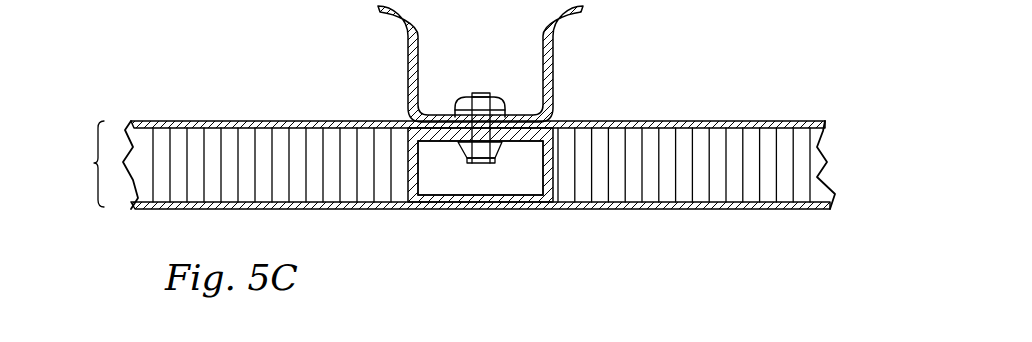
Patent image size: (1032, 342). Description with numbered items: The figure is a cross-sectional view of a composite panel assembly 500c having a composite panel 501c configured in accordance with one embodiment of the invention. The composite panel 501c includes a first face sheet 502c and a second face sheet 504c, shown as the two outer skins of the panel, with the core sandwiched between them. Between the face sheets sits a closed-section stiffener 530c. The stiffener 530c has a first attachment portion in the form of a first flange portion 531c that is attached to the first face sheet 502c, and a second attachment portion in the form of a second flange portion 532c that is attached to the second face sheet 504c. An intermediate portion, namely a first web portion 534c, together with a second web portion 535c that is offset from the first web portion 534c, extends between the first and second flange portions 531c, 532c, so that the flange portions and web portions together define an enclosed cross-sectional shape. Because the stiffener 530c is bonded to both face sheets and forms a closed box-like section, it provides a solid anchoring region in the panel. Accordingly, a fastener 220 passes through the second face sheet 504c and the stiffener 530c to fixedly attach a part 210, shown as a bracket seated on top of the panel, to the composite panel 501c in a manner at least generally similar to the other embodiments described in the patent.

The composite panel assembly 500c is at (120, 231).
The composite panel 501c is at (93, 163).
The second face sheet 504c is at (722, 122).
The first face sheet 502c is at (745, 210).
The closed-section stiffener 530c is at (450, 210).
The first flange portion 531c is at (557, 205).
The second flange portion 532c is at (567, 128).
The first web portion 534c is at (428, 122).
The second web portion 535c is at (510, 200).
The part 210 is at (553, 65).
The fastener 220 is at (478, 93).